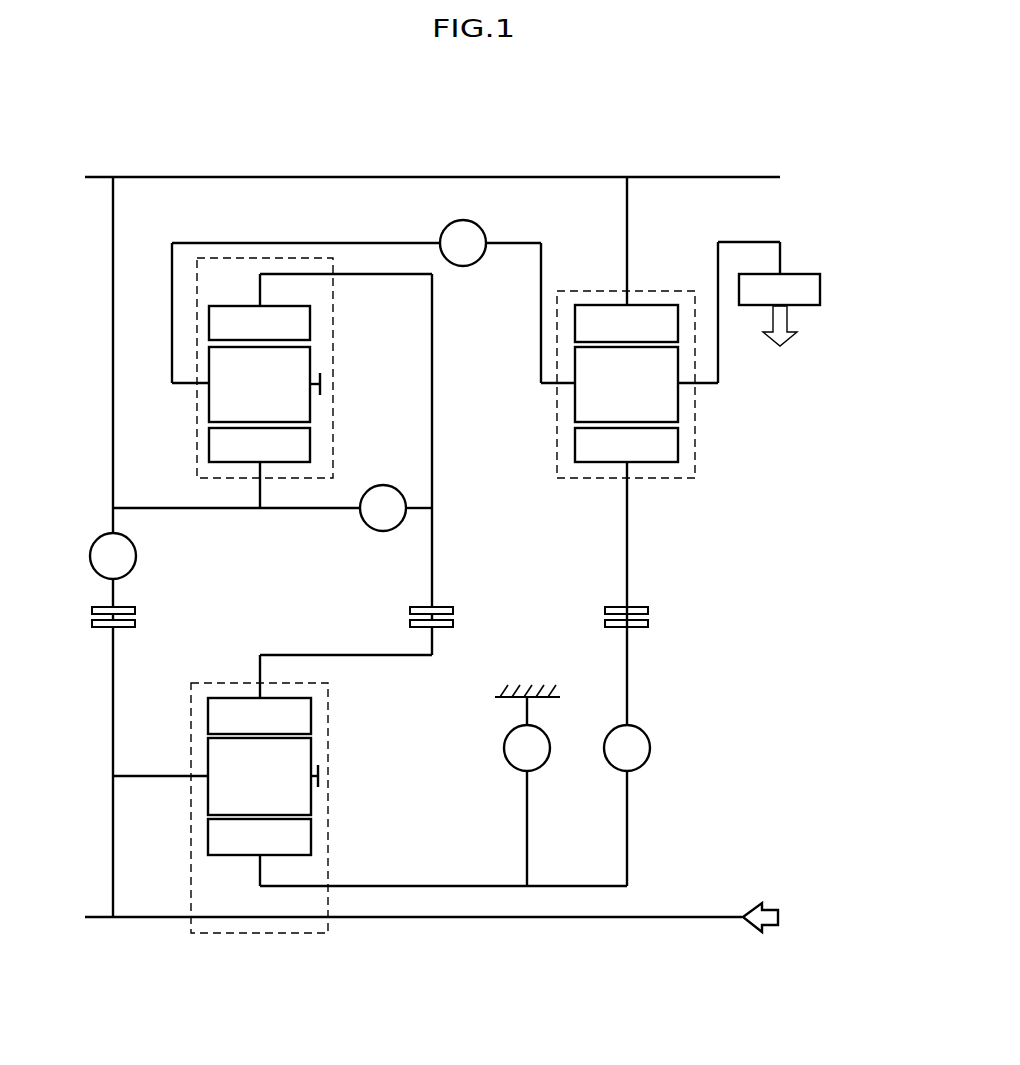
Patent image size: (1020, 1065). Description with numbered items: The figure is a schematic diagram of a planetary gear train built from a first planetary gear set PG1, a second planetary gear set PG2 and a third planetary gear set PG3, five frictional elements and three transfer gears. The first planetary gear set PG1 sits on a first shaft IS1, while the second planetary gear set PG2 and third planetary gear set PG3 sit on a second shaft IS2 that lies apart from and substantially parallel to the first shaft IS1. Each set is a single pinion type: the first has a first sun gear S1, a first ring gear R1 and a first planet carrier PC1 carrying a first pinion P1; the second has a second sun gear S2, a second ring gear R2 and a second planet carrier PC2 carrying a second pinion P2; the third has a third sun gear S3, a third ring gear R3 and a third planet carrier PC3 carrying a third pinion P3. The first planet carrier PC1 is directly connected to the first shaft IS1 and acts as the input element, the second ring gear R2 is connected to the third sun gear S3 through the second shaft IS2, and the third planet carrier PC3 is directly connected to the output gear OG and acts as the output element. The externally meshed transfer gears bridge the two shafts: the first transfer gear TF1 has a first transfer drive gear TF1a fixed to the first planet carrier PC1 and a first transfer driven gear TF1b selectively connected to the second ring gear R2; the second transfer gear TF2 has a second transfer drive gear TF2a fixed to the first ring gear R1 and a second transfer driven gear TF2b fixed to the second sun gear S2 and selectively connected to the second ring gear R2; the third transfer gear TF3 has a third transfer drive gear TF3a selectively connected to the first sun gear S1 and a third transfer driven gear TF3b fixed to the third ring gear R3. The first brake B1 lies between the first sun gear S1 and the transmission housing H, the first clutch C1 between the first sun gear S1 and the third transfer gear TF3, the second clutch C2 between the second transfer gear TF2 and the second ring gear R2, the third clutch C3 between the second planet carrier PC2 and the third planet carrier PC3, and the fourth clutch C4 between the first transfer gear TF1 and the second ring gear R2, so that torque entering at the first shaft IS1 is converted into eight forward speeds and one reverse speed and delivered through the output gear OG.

The first planetary gear set PG1 is at (409, 850).
The second planetary gear set PG2 is at (265, 297).
The third planetary gear set PG3 is at (631, 297).
The first sun gear S1 is at (259, 837).
The first pinion P1 is at (263, 776).
The first ring gear R1 is at (259, 716).
The second sun gear S2 is at (259, 323).
The second pinion P2 is at (264, 384).
The second ring gear R2 is at (259, 445).
The third sun gear S3 is at (626, 323).
The third pinion P3 is at (626, 384).
The third ring gear R3 is at (626, 445).
The first planet carrier PC1 is at (180, 778).
The second planet carrier PC2 is at (183, 384).
The third planet carrier PC3 is at (705, 385).
The first shaft IS1 is at (582, 920).
The second shaft IS2 is at (425, 177).
The output gear OG is at (779, 325).
The first clutch C1 is at (627, 674).
The second clutch C2 is at (272, 486).
The third clutch C3 is at (373, 301).
The fourth clutch C4 is at (113, 556).
The first brake B1 is at (527, 791).
The transmission housing H is at (535, 683).
The first transfer gear TF1 is at (172, 615).
The first transfer drive gear TF1a is at (136, 626).
The first transfer driven gear TF1b is at (136, 610).
The second transfer gear TF2 is at (491, 615).
The second transfer drive gear TF2a is at (454, 626).
The second transfer driven gear TF2b is at (454, 610).
The third transfer gear TF3 is at (686, 615).
The third transfer drive gear TF3a is at (649, 626).
The third transfer driven gear TF3b is at (649, 610).